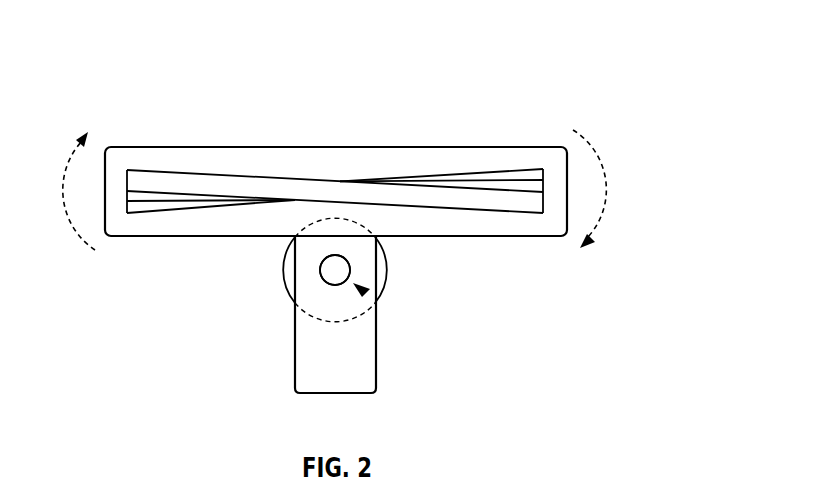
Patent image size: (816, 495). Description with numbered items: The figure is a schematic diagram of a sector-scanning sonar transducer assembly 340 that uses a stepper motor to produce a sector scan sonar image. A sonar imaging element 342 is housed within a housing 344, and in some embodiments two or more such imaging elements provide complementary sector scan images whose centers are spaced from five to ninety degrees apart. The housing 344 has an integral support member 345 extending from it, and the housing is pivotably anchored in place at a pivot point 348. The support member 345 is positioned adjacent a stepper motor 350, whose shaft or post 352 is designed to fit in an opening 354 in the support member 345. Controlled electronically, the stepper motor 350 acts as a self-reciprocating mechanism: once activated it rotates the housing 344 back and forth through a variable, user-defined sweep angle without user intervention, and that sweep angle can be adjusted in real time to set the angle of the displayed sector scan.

The sector-scanning sonar transducer assembly 340 is at (602, 63).
The sonar imaging element 342 is at (180, 172).
The housing 344 is at (253, 236).
The support member 345 is at (295, 341).
The pivot point 348 is at (324, 281).
The stepper motor 350 is at (388, 276).
The shaft or post 352 is at (338, 270).
The opening 354 is at (366, 293).